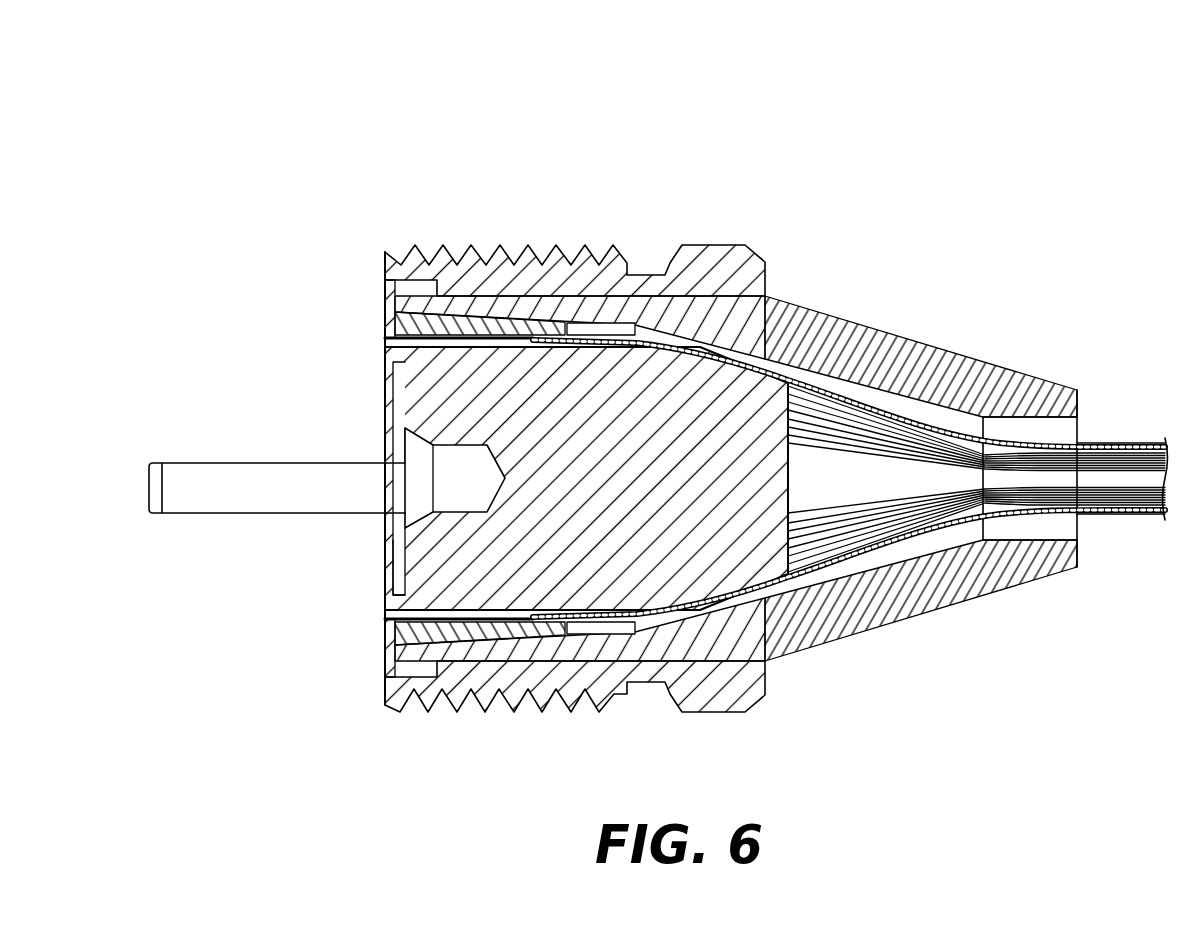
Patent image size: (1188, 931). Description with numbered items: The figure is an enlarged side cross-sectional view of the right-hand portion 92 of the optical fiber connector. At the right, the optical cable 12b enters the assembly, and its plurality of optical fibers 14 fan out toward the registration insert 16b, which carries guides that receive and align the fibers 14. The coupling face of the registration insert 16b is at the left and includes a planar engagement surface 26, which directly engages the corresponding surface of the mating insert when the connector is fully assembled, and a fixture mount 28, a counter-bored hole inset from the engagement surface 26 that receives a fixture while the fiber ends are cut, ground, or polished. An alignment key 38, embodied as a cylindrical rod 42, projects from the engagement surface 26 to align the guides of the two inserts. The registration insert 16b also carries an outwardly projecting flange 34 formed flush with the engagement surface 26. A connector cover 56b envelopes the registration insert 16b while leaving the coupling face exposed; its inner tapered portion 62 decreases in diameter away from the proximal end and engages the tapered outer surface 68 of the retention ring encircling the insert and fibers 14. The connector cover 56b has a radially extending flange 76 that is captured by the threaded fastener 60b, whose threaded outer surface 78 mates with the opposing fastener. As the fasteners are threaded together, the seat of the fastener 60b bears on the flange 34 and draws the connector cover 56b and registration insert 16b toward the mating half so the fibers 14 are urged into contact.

The right-hand portion 92 is at (905, 113).
The threaded fastener 60b is at (575, 459).
The threaded outer surface 78 is at (486, 252).
The flange 76 is at (386, 288).
The tapered outer surface 68 is at (396, 320).
The planar engagement surface 26 is at (386, 352).
The fixture mount 28 is at (393, 565).
The flange 34 is at (386, 643).
The rod 42 is at (273, 500).
The alignment key 38 is at (174, 531).
The inner tapered portion 62 is at (488, 642).
The registration insert 16b is at (770, 363).
The connector cover 56b is at (920, 350).
The optical fibers 14 is at (917, 523).
The optical cable 12b is at (1120, 440).